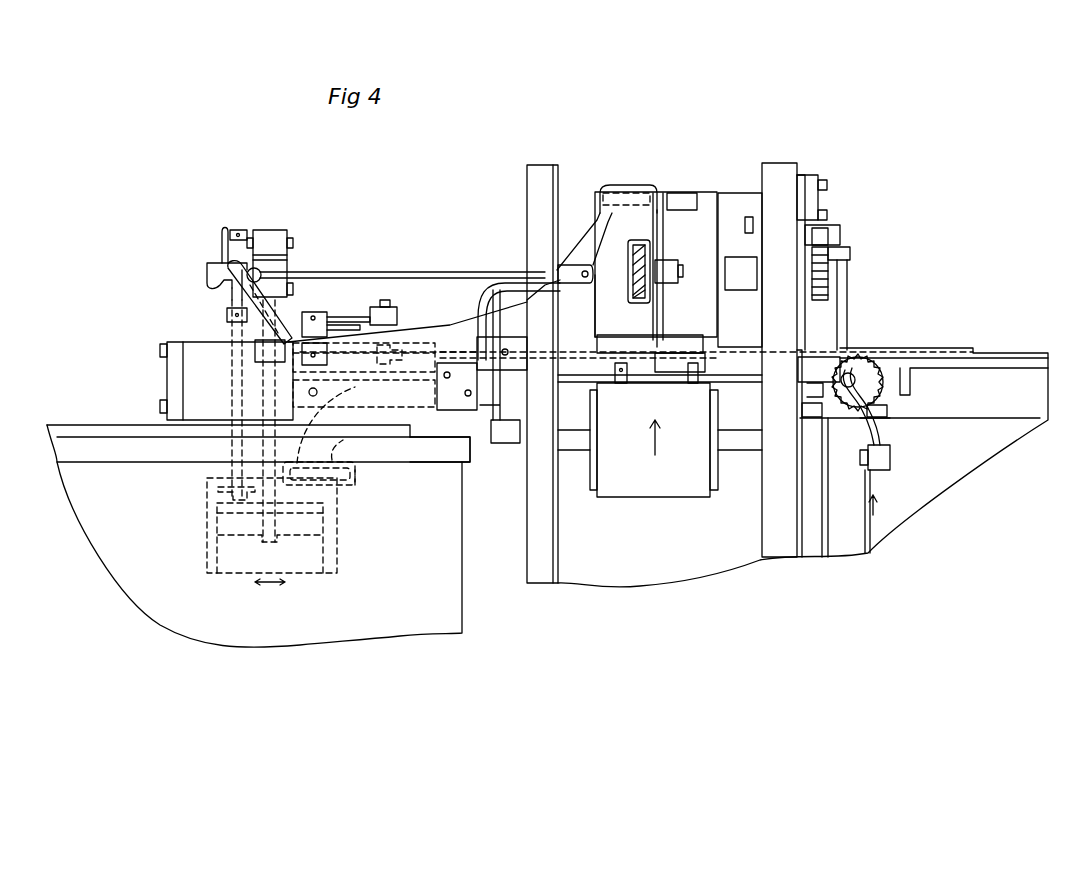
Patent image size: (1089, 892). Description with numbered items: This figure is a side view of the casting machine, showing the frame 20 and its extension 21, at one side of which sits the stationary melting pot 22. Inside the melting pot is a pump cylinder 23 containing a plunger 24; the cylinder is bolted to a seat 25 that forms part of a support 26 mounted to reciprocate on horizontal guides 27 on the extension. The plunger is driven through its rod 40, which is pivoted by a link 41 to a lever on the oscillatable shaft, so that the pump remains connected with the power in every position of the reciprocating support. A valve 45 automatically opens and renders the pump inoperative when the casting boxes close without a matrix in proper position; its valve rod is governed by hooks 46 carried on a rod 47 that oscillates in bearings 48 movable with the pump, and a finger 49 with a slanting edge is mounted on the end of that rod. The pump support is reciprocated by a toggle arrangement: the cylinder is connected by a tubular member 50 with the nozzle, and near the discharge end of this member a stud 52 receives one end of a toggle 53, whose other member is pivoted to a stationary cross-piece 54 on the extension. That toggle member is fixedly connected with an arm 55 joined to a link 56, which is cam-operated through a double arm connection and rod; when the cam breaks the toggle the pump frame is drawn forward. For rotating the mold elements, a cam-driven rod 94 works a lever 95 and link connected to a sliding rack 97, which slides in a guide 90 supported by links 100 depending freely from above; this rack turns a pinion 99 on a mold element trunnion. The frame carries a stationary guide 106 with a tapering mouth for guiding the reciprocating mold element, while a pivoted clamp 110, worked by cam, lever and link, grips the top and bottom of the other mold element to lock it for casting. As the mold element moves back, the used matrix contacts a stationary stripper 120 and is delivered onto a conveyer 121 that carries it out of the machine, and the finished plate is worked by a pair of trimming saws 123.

The frame 20 is at (540, 165).
The extension 21 is at (197, 352).
The melting pot 22 is at (462, 620).
The pump cylinder 23 is at (333, 503).
The plunger 24 is at (233, 527).
The seat 25 is at (355, 482).
The support 26 is at (364, 403).
The horizontal guides 27 is at (433, 408).
The rod 40 is at (227, 325).
The link 41 is at (257, 233).
The valve 45 is at (233, 297).
The hooks 46 is at (222, 238).
The rod 47 is at (322, 270).
The bearings 48 is at (247, 267).
The finger 49 is at (613, 185).
The tubular member 50 is at (343, 450).
The stud 52 is at (462, 347).
The toggle 53 is at (392, 370).
The cross-piece 54 is at (327, 333).
The arm 55 is at (350, 315).
The link 56 is at (395, 312).
The guide 90 is at (833, 228).
The rod 94 is at (890, 457).
The lever 95 is at (842, 328).
The sliding rack 97 is at (828, 235).
The pinion 99 is at (827, 283).
The links 100 is at (818, 195).
The stationary guide 106 is at (730, 200).
The pivoted clamp 110 is at (658, 253).
The stripper 120 is at (688, 385).
The conveyer 121 is at (673, 483).
The trimming saws 123 is at (868, 395).